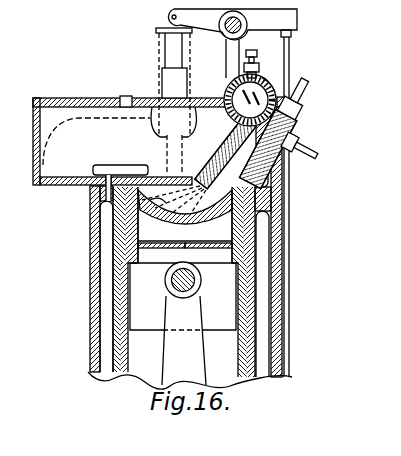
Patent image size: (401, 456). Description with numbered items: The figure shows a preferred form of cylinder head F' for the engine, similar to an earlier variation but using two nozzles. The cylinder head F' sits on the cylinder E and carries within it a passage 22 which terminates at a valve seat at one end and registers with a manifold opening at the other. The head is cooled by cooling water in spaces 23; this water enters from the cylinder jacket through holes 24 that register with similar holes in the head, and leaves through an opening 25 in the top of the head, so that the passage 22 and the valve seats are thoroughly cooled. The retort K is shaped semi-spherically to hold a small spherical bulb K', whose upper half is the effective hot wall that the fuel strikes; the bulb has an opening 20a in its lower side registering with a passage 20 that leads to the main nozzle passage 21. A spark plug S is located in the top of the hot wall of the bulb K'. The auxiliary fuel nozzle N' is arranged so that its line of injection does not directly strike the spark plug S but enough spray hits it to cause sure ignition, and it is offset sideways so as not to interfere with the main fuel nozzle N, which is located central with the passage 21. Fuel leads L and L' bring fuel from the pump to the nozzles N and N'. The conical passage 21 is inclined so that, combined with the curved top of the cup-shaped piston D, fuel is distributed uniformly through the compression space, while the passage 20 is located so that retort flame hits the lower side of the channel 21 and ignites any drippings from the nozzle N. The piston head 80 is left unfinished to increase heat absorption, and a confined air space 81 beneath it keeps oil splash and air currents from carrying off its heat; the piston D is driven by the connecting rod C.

The cylinder head F' is at (143, 141).
The opening in the top of the head 25 is at (126, 96).
The passage 22 is at (144, 101).
The cooling water space 23 is at (107, 278).
The hole 24 is at (100, 222).
The cylinder E is at (279, 312).
The opening in bulb 20a is at (278, 143).
The passage 20 is at (242, 140).
The retort K is at (241, 102).
The spherical bulb K' is at (303, 71).
The spark plug S is at (256, 64).
The main fuel nozzle N is at (307, 108).
The fuel lead L is at (302, 90).
The auxiliary fuel nozzle N' is at (311, 142).
The fuel lead L' is at (312, 154).
The main nozzle passage 21 is at (194, 188).
The piston D is at (183, 260).
The piston head 80 is at (161, 236).
The confined air space 81 is at (208, 236).
The connecting rod C is at (184, 340).